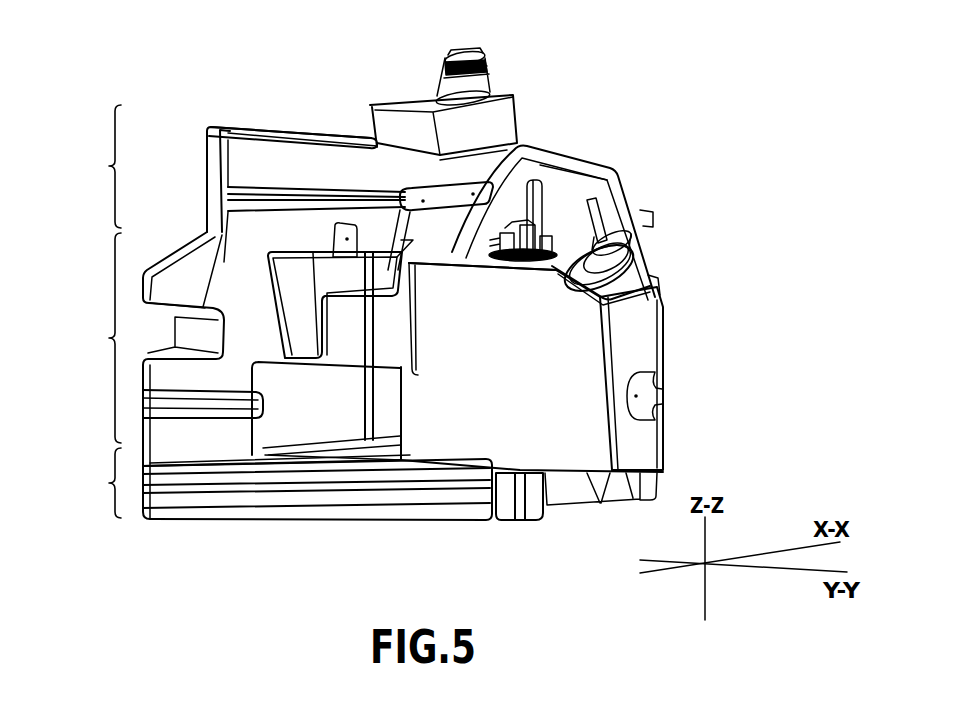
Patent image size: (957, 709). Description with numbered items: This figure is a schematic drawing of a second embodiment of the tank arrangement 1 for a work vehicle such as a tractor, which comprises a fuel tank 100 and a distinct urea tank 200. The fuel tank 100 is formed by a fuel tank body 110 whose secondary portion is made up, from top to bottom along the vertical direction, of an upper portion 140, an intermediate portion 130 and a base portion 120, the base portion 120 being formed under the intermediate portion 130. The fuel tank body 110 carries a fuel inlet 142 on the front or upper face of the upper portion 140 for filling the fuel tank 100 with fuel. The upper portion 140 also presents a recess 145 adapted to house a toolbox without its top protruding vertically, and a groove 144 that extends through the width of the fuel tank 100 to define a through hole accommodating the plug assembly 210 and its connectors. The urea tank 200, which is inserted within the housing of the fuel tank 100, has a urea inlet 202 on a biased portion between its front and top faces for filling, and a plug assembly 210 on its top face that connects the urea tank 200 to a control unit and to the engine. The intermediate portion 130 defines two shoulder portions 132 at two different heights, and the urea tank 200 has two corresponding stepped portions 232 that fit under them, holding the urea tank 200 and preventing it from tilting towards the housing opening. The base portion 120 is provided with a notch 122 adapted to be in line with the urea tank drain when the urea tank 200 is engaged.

The tank arrangement 1 is at (719, 99).
The fuel tank 100 is at (291, 126).
The fuel tank body 110 is at (483, 160).
The base portion 120 is at (280, 484).
The notch 122 is at (508, 498).
The intermediate portion 130 is at (94, 338).
The shoulder portions 132 is at (318, 280).
The upper portion 140 is at (94, 166).
The fuel inlet 142 is at (487, 66).
The groove 144 is at (440, 223).
The recess 145 is at (272, 127).
The urea tank 200 is at (671, 338).
The urea inlet 202 is at (628, 257).
The plug assembly 210 is at (527, 236).
The stepped portions 232 is at (405, 376).